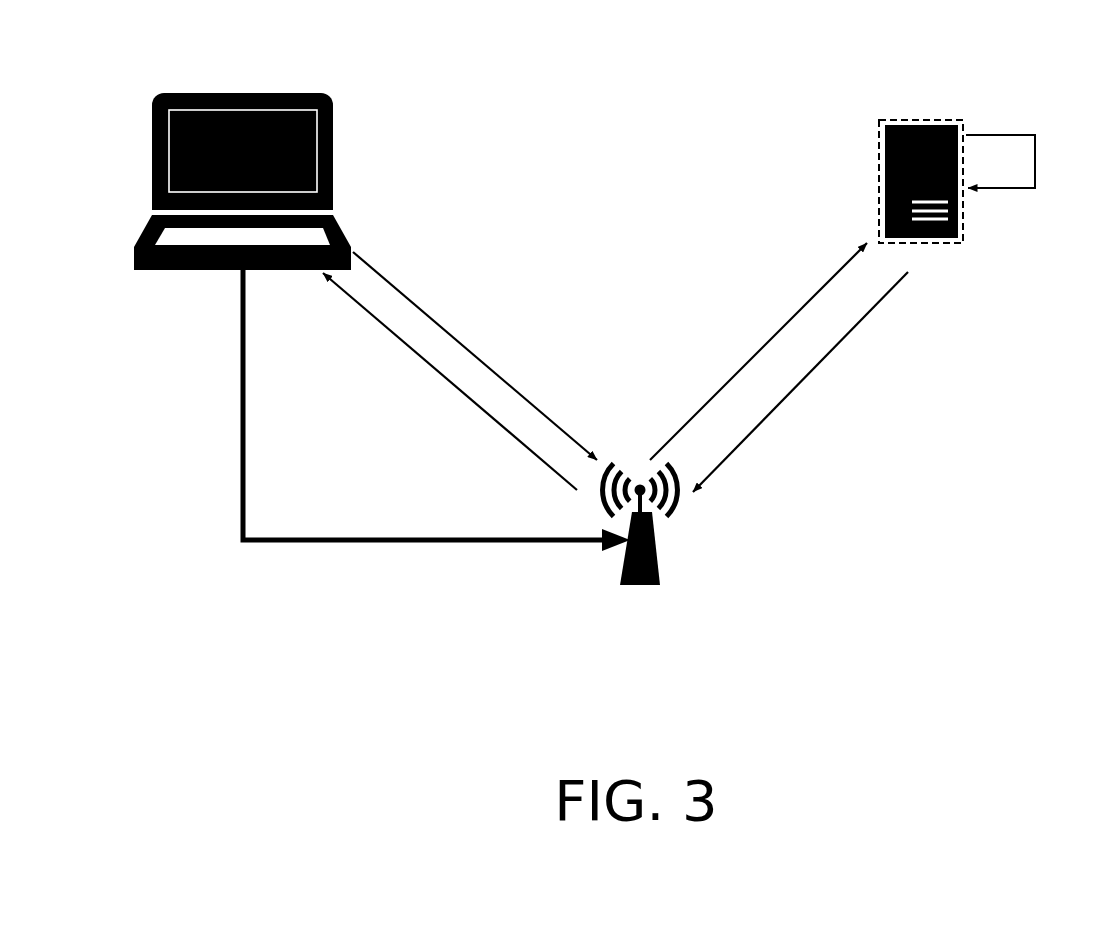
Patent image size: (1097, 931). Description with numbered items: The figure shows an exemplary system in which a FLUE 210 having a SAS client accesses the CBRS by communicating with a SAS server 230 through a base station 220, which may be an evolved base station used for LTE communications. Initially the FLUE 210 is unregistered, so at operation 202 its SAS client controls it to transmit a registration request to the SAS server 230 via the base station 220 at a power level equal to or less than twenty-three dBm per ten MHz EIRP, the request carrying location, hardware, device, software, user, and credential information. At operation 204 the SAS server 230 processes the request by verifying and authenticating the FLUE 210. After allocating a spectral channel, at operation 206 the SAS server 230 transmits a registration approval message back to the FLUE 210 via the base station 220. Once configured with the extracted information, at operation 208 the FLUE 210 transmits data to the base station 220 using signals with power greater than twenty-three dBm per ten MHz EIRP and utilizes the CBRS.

The FLUE 210 is at (242, 144).
The base station 220 is at (640, 568).
The SAS server 230 is at (911, 153).
The operation of transmitting a registration request 202 is at (610, 351).
The operation of processing the registration request 204 is at (1028, 161).
The operation of transmitting a registration approval message 206 is at (615, 382).
The operation of transmitting data at higher power 208 is at (436, 410).